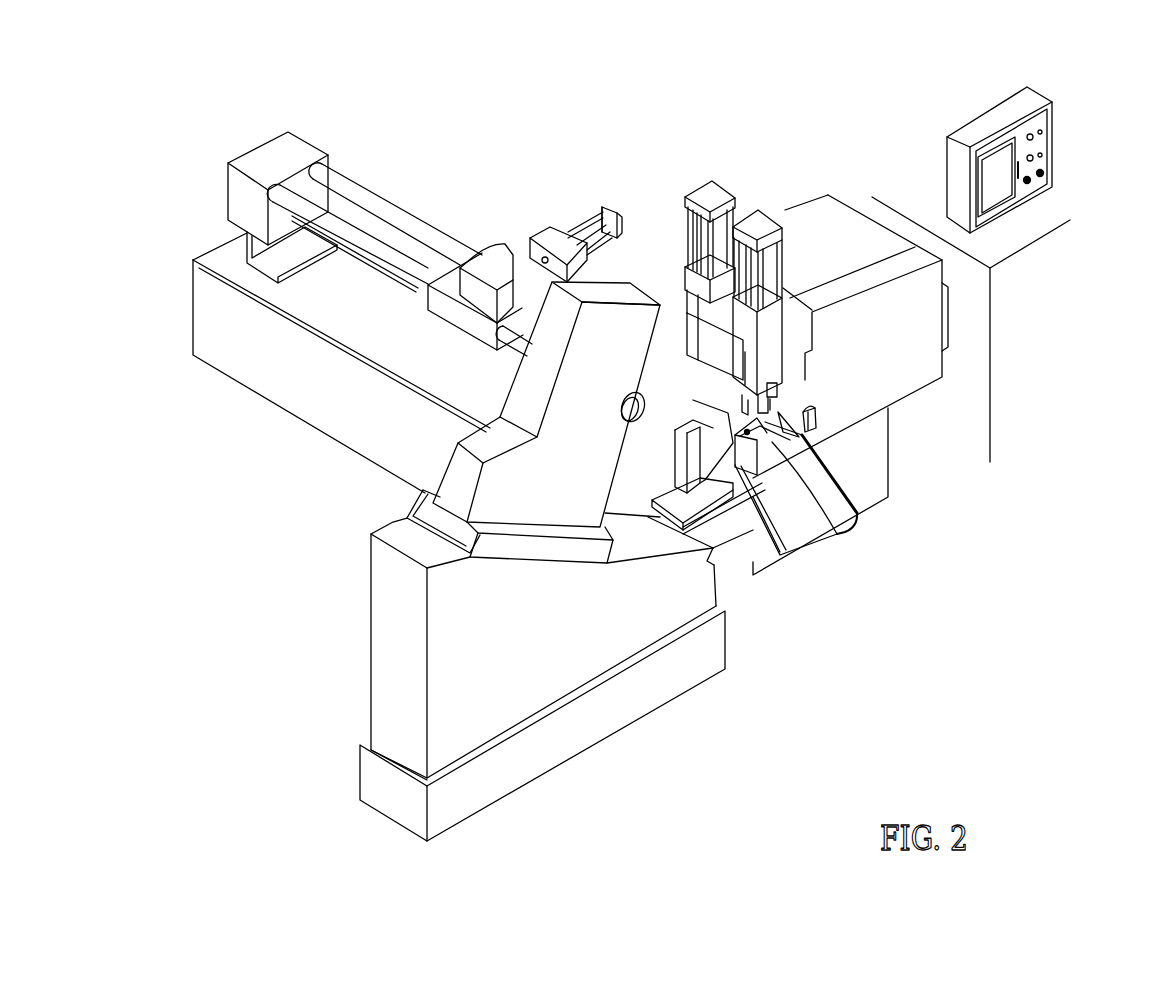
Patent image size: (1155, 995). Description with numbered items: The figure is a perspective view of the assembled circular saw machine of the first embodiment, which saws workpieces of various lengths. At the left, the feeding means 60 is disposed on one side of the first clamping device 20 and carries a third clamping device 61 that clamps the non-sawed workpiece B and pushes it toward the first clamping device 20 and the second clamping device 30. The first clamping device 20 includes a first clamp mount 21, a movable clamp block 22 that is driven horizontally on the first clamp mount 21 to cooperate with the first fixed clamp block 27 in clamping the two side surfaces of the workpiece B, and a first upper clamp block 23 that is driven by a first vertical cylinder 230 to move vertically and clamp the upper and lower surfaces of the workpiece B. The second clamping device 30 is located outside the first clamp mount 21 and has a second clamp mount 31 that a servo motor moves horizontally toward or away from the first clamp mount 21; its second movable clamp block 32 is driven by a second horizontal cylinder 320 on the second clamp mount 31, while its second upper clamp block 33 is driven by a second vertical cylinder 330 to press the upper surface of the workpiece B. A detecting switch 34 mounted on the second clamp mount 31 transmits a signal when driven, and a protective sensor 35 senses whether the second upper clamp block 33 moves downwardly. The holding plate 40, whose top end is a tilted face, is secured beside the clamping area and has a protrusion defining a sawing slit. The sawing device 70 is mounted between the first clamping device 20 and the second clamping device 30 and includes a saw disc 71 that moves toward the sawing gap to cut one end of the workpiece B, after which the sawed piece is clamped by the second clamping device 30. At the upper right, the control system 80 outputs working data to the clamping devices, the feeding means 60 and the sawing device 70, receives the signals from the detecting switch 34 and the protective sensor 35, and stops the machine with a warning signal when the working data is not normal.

The first clamping device 20 is at (752, 178).
The first clamp mount 21 is at (815, 218).
The movable clamp block 22 is at (752, 380).
The first upper clamp block 23 is at (708, 335).
The first fixed clamp block 27 is at (677, 432).
The second clamping device 30 is at (923, 422).
The second clamp mount 31 is at (905, 367).
The second movable clamp block 32 is at (770, 413).
The second upper clamp block 33 is at (755, 372).
The detecting switch 34 is at (810, 427).
The protective sensor 35 is at (767, 390).
The holding plate 40 is at (762, 437).
The feeding means 60 is at (448, 180).
The third clamping device 61 is at (528, 243).
The sawing device 70 is at (306, 490).
The saw disc 71 is at (667, 343).
The control system 80 is at (1062, 110).
The first vertical cylinder 230 is at (705, 193).
The second horizontal cylinder 320 is at (945, 317).
The second vertical cylinder 330 is at (761, 223).
The non-sawed workpiece B is at (497, 263).